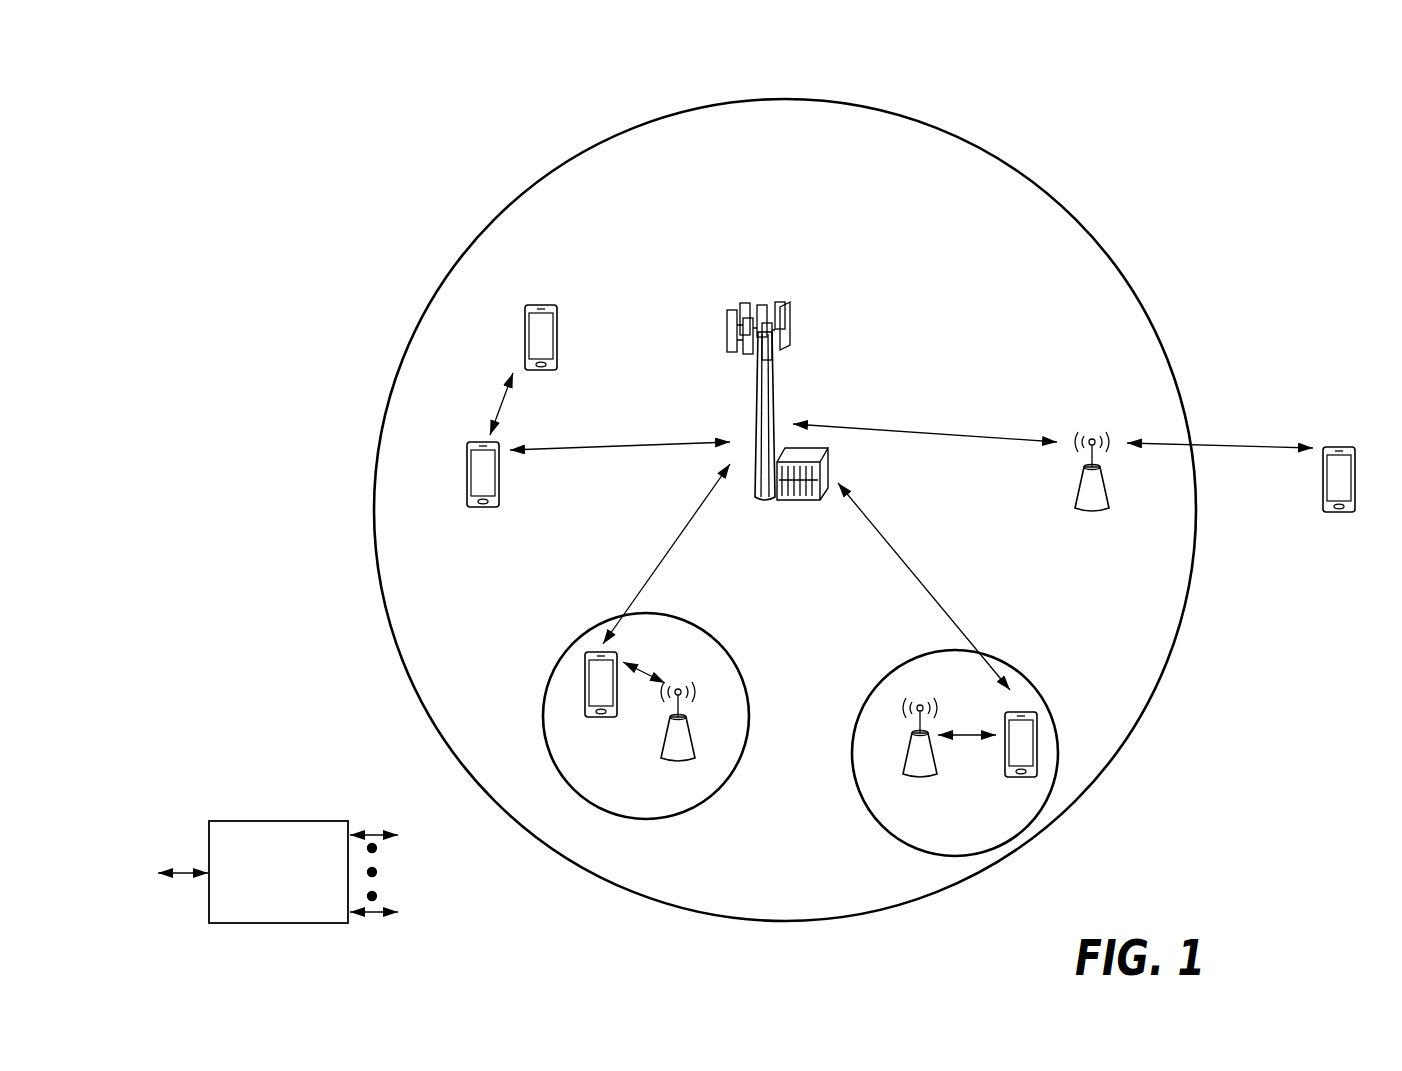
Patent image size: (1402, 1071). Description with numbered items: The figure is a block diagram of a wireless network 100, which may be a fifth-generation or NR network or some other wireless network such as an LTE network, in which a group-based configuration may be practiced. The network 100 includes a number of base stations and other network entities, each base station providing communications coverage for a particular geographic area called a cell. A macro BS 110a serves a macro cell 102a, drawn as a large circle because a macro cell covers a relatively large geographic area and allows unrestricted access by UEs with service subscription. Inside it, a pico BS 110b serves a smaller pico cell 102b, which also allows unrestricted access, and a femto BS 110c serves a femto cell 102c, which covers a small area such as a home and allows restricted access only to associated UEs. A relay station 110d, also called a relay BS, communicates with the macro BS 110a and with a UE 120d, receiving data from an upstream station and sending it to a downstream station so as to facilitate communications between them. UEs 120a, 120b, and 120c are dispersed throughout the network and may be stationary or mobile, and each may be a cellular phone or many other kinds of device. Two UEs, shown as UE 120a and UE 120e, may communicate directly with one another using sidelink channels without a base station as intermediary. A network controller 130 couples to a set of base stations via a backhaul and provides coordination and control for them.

The wireless network 100 is at (265, 95).
The macro cell 102a is at (1058, 203).
The pico cell 102b is at (731, 658).
The femto cell 102c is at (893, 668).
The macro BS 110a is at (769, 296).
The pico BS 110b is at (700, 753).
The femto BS 110c is at (905, 766).
The relay station 110d is at (1093, 438).
The UE 120a is at (466, 472).
The UE 120b is at (590, 718).
The UE 120c is at (1005, 778).
The UE 120d is at (1350, 447).
The UE 120e is at (526, 326).
The network controller 130 is at (276, 821).